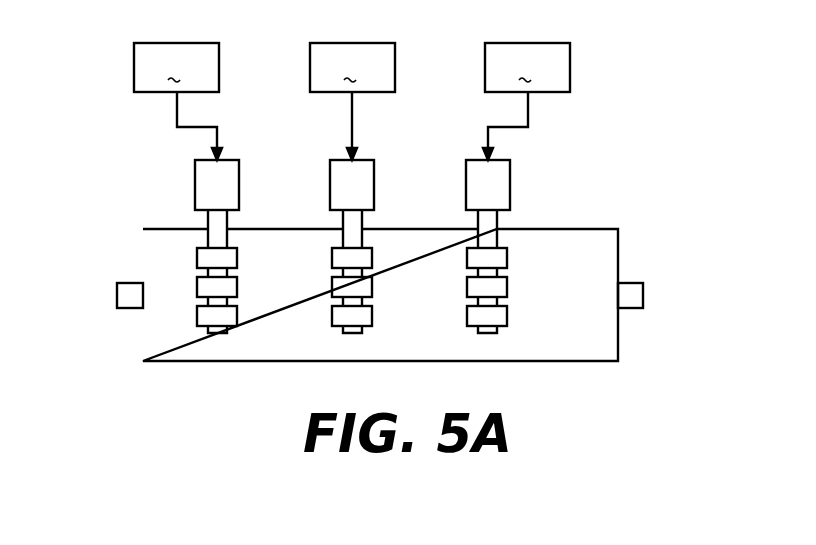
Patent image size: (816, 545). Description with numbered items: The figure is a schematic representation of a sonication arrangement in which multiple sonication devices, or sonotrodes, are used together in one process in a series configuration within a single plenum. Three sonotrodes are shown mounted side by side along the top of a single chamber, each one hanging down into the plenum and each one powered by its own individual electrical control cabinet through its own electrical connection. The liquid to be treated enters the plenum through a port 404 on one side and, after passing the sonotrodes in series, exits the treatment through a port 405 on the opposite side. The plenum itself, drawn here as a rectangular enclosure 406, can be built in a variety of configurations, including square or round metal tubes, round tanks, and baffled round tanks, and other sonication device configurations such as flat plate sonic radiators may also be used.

The port 404 is at (117, 296).
The port 405 is at (643, 296).
The housing 406 is at (595, 228).